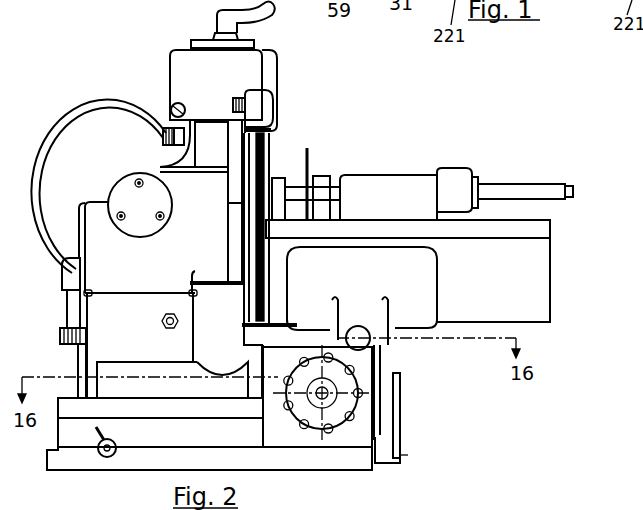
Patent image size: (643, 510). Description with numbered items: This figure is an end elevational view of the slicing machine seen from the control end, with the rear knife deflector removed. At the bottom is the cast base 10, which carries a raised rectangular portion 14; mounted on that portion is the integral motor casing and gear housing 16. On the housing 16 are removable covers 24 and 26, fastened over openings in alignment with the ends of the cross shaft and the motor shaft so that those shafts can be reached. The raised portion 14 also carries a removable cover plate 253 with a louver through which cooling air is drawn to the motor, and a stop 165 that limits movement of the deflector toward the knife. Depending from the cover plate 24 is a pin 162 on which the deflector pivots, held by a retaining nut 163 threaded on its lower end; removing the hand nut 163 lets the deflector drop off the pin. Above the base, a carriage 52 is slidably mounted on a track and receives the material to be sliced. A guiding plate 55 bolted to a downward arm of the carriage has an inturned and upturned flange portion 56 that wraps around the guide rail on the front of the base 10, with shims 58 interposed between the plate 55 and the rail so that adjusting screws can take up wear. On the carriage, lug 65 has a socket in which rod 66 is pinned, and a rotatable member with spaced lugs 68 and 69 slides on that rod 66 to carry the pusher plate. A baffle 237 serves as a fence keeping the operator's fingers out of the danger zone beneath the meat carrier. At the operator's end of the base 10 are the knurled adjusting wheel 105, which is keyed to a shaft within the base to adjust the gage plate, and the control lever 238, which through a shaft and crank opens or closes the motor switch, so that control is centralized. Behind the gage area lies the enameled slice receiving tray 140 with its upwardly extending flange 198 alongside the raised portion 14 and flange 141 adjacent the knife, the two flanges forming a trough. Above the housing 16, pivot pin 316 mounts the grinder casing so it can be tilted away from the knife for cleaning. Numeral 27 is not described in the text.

The base 10 is at (160, 457).
The raised portion 14 is at (195, 315).
The motor casing and gear housing 16 is at (93, 210).
The removable cover 24 is at (62, 263).
The removable cover 26 is at (167, 202).
The screw 27 is at (163, 220).
The carriage 52 is at (408, 318).
The guiding plate 55 is at (400, 433).
The inturned and upturned flange portion 56 is at (390, 463).
The shims 58 is at (402, 462).
The lug 65 is at (282, 176).
The rod 66 is at (553, 183).
The lug 68 is at (322, 176).
The lug 69 is at (462, 158).
The knurled adjusting wheel 105 is at (318, 420).
The slice receiving tray 140 is at (228, 404).
The flange 141 is at (250, 362).
The pin 162 is at (68, 305).
The retaining nut 163 is at (60, 336).
The stop 165 is at (167, 330).
The flange portion 198 is at (197, 368).
The baffle 237 is at (270, 289).
The control lever 238 is at (97, 440).
The cover plate 253 is at (78, 362).
The pivot pin 316 is at (172, 110).